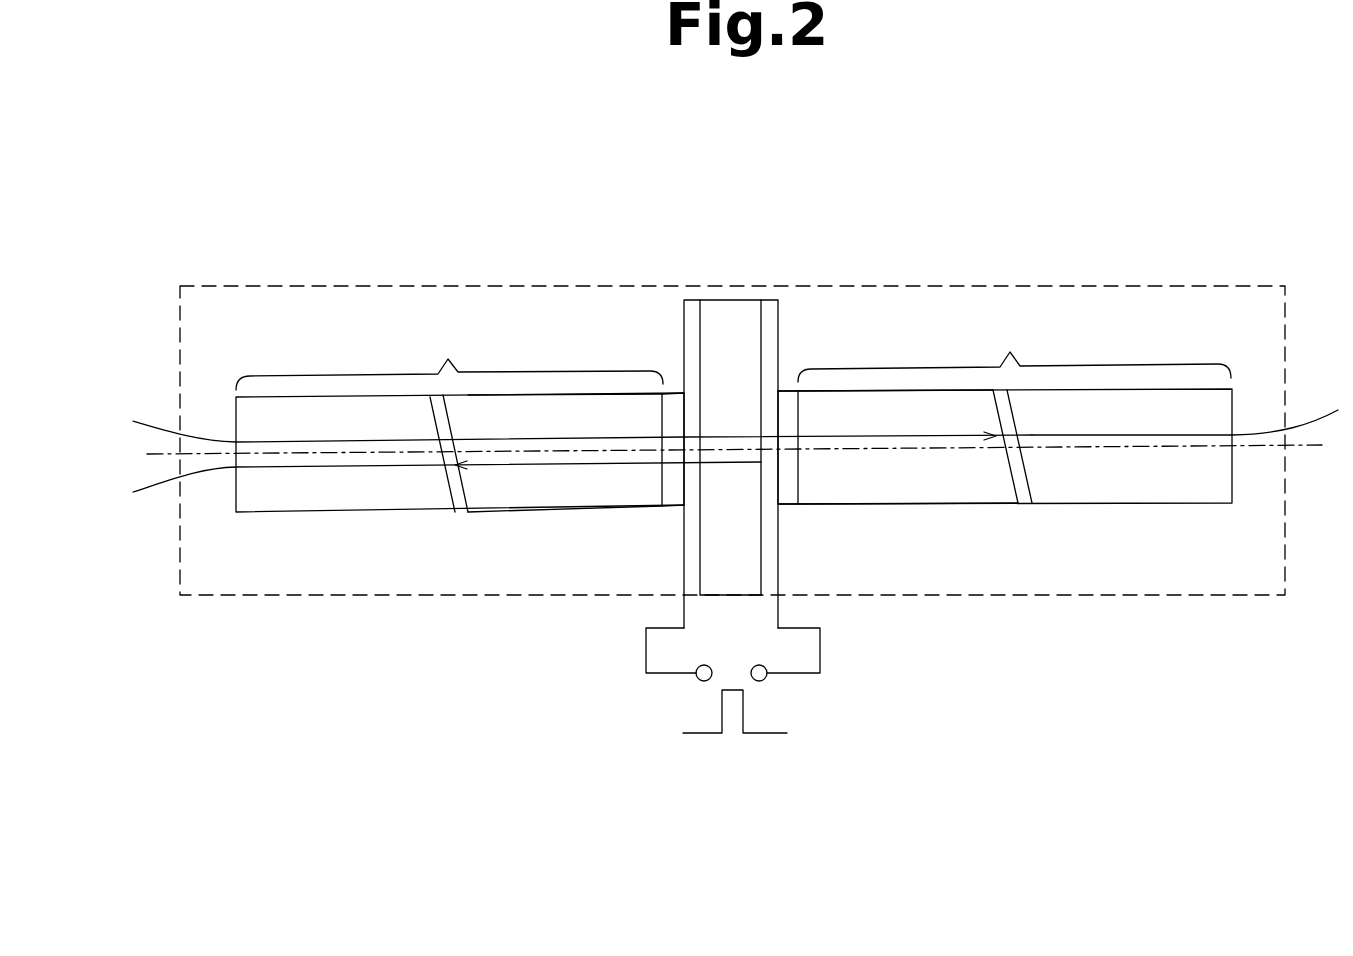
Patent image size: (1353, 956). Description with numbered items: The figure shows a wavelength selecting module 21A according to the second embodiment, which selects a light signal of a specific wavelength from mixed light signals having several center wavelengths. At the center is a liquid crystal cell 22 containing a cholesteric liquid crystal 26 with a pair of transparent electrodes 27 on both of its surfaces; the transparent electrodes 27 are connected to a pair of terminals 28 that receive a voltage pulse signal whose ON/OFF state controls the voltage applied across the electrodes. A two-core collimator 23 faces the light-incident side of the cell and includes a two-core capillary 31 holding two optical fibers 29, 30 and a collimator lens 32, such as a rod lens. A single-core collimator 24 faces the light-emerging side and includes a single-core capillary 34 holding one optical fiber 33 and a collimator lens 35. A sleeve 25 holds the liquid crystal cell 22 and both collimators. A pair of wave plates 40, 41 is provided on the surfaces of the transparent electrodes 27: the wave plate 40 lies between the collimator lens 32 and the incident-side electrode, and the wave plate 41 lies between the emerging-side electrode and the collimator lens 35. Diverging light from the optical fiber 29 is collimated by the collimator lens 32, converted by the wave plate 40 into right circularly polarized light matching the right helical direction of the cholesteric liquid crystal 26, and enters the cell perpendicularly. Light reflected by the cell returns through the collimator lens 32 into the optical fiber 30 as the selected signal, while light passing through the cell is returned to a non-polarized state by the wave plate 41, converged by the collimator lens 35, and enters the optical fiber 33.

The wavelength selecting module 21A is at (1146, 198).
The liquid crystal cell 22 is at (741, 285).
The two-core collimator 23 is at (460, 415).
The single-core collimator 24 is at (1005, 409).
The sleeve 25 is at (526, 283).
The cholesteric liquid crystal 26 is at (717, 300).
The transparent electrodes 27 is at (676, 572).
The terminals 28 is at (698, 680).
The optical fiber 29 is at (355, 441).
The optical fiber 30 is at (303, 467).
The two-core capillary 31 is at (420, 503).
The collimator lens 32 is at (560, 500).
The optical fiber 33 is at (1136, 440).
The single-core capillary 34 is at (1066, 497).
The collimator lens 35 is at (903, 497).
The wave plate 40 is at (674, 400).
The wave plate 41 is at (786, 400).